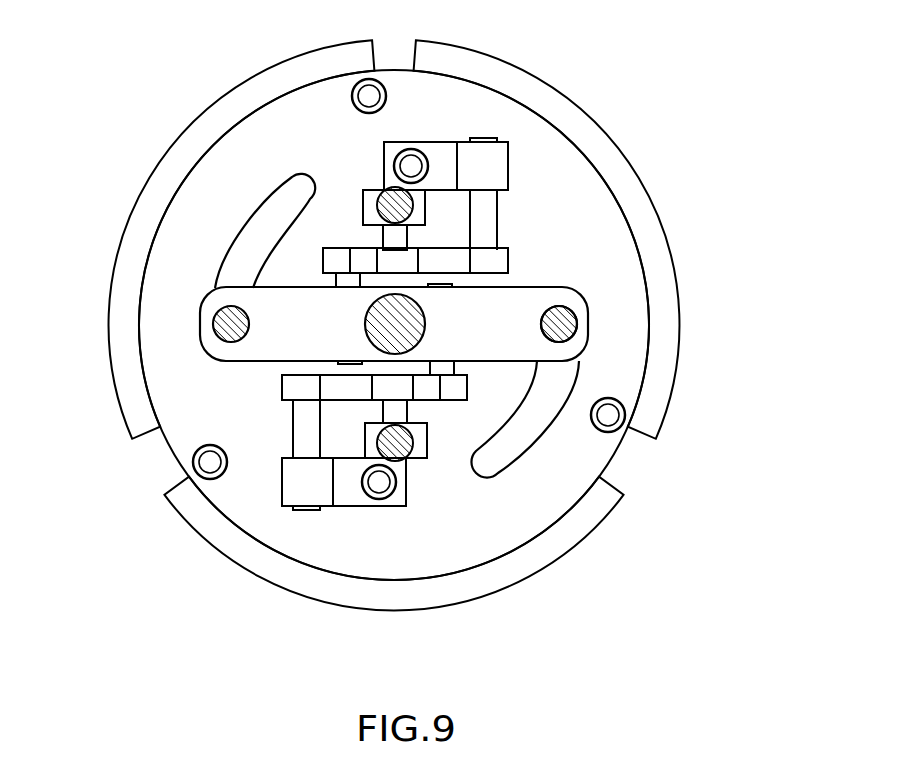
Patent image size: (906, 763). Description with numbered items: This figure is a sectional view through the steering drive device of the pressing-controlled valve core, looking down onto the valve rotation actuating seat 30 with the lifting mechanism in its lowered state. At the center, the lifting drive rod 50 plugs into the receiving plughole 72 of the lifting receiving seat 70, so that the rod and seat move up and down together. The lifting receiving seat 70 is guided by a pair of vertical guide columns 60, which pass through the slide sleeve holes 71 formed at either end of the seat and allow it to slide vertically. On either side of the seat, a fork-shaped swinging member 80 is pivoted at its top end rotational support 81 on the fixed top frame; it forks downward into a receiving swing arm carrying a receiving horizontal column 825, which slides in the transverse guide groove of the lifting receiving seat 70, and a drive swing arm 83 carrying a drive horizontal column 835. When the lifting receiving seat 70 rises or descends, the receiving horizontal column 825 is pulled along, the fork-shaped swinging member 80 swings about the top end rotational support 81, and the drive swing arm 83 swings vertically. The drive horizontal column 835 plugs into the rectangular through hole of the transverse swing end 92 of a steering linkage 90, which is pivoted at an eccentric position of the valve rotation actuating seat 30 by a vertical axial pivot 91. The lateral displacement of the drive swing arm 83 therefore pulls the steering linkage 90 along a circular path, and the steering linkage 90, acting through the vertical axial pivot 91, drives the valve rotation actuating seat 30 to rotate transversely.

The valve rotation actuating seat 30 is at (490, 102).
The lifting drive rod 50 is at (413, 306).
The vertical guide column 60 is at (228, 322).
The lifting receiving seat 70 is at (270, 353).
The slide sleeve hole 71 is at (568, 322).
The receiving plughole 72 is at (370, 317).
The fork-shaped swinging member 80 is at (480, 414).
The top end rotational support 81 is at (412, 413).
The receiving horizontal column 825 is at (607, 459).
The drive swing arm 83 is at (343, 397).
The drive horizontal column 835 is at (295, 447).
The steering linkage 90 is at (355, 521).
The vertical axial pivot 91 is at (383, 482).
The transverse swing end 92 is at (290, 493).